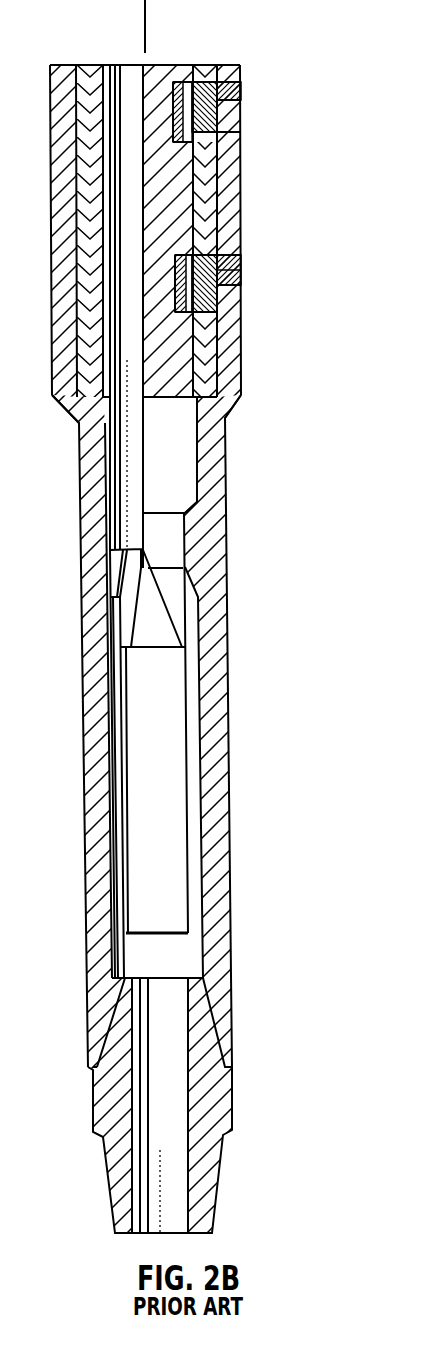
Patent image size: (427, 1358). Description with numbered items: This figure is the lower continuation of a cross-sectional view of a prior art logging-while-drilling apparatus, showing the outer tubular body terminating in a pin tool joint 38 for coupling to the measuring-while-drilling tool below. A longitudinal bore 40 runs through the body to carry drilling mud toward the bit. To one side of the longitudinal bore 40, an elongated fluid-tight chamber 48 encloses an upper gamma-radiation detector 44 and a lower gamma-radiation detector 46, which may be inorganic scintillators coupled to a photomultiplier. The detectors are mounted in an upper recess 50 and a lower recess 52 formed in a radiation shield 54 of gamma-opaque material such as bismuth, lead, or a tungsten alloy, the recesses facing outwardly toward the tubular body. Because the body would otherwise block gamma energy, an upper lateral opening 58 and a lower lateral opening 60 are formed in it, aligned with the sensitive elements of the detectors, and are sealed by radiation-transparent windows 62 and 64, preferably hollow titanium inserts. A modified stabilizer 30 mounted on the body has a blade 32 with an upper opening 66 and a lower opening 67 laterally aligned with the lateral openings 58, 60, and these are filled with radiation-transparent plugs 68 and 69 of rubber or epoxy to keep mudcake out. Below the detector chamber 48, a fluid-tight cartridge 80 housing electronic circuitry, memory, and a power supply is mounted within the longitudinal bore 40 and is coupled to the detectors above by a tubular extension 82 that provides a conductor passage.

The modified stabilizer 30 is at (230, 197).
The blade 32 is at (237, 407).
The pin tool joint 38 is at (207, 1167).
The longitudinal bore 40 is at (200, 634).
The upper gamma-radiation detector 44 is at (182, 139).
The lower gamma-radiation detector 46 is at (186, 308).
The fluid-tight chamber 48 is at (140, 200).
The upper recess 50 is at (174, 83).
The lower recess 52 is at (188, 262).
The radiation shield 54 is at (165, 175).
The upper lateral opening 58 is at (207, 86).
The lower lateral opening 60 is at (245, 322).
The upper radiation-transparent window 62 is at (240, 108).
The lower radiation-transparent window 64 is at (242, 290).
The upper opening 66 is at (240, 121).
The lower opening 67 is at (242, 264).
The upper plug 68 is at (240, 90).
The lower plug 69 is at (242, 280).
The cartridge 80 is at (170, 802).
The tubular extension 82 is at (165, 546).